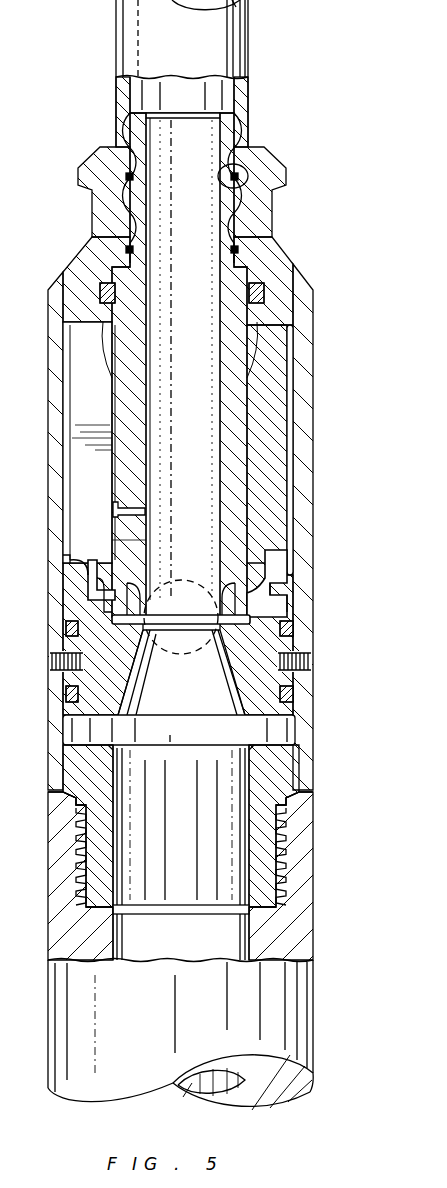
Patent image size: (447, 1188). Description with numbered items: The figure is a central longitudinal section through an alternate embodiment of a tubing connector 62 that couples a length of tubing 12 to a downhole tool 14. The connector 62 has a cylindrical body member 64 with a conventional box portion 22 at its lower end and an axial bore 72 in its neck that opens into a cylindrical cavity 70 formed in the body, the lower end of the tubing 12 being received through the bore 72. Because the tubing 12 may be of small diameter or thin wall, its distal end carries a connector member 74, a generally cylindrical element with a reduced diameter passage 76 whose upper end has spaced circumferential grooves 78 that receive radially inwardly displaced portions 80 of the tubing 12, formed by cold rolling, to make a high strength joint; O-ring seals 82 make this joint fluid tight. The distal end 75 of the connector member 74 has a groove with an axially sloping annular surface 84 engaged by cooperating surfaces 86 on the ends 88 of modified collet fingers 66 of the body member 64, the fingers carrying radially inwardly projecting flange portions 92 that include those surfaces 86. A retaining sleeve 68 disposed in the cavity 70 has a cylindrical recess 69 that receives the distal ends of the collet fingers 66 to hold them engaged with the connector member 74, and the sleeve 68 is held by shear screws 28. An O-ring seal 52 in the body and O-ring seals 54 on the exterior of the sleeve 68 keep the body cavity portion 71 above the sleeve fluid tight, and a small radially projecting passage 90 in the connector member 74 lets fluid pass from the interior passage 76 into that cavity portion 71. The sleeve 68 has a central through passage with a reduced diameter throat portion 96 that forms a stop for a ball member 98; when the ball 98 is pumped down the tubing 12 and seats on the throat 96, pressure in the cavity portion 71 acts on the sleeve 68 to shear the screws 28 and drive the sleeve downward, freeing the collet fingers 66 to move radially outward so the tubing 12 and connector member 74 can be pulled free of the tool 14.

The tubing 12 is at (247, 45).
The tool 14 is at (313, 1023).
The box portion 22 is at (283, 886).
The screws 28 is at (55, 665).
The O-ring seal 52 is at (264, 295).
The O-ring seals 54 is at (70, 631).
The connector 62 is at (313, 343).
The cylindrical body member 64 is at (313, 422).
The collet fingers 66 is at (72, 513).
The retaining sleeve 68 is at (290, 596).
The cylindrical recess 69 is at (283, 562).
The cylindrical cavity 70 is at (212, 748).
The body cavity portion 71 is at (90, 468).
The axial bore 72 is at (246, 176).
The connector member 74 is at (250, 378).
The distal end 75 is at (140, 735).
The reduced diameter passage 76 is at (197, 299).
The circumferential grooves 78 is at (240, 138).
The radially inwardly displaced portions 80 is at (163, 78).
The O-ring seals 82 is at (134, 178).
The axially sloping annular surface 84 is at (85, 566).
The cooperating surface 86 is at (158, 584).
The ends 88 is at (276, 578).
The radially projecting passage 90 is at (136, 505).
The flange portions 92 is at (147, 540).
The reduced diameter throat portion 96 is at (163, 653).
The ball member 98 is at (204, 655).